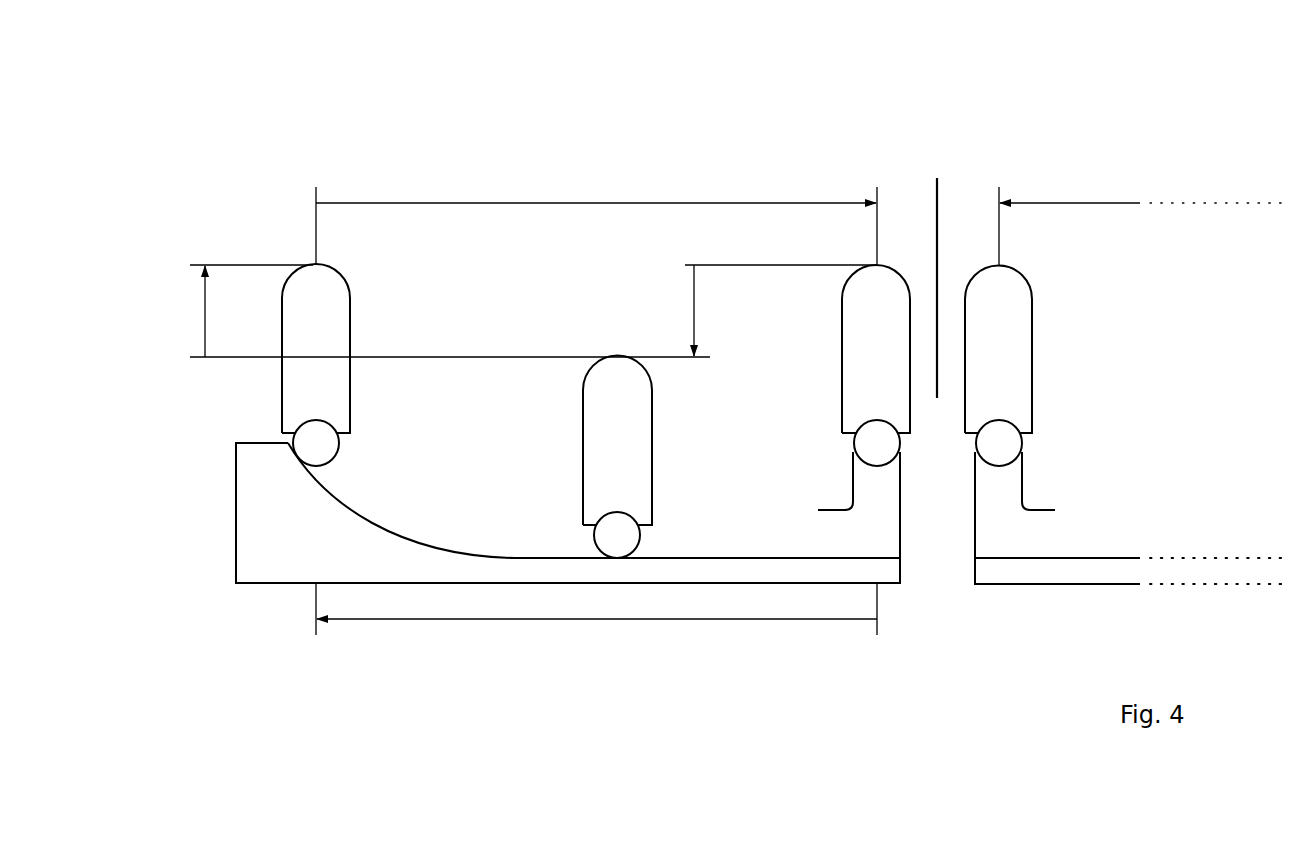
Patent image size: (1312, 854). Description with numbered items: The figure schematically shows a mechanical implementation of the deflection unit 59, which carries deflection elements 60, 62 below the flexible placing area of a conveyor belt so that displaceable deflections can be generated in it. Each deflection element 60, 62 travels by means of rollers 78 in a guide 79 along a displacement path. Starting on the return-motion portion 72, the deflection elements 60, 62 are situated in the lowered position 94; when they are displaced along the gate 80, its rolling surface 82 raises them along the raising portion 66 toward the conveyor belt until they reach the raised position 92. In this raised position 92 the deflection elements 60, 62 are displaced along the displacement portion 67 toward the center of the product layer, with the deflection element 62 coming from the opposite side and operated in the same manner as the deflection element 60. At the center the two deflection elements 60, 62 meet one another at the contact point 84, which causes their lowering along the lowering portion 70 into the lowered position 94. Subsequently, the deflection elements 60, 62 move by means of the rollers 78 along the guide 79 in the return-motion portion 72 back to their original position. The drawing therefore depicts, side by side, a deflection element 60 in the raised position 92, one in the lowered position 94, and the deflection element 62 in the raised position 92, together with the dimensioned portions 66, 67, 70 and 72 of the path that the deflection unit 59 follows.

The deflection unit 59 is at (1182, 130).
The deflection element 60 is at (596, 394).
The deflection element 62 is at (1008, 323).
The raising portion 66 is at (205, 306).
The displacement portion 67 is at (562, 203).
The lowering portion 70 is at (694, 307).
The return-motion portion 72 is at (562, 619).
The rollers 78 is at (303, 440).
The guide 79 is at (759, 513).
The gate 80 is at (568, 513).
The rolling surface 82 is at (420, 540).
The contact point 84 is at (937, 178).
The raised position 92 is at (716, 394).
The lowered position 94 is at (620, 418).